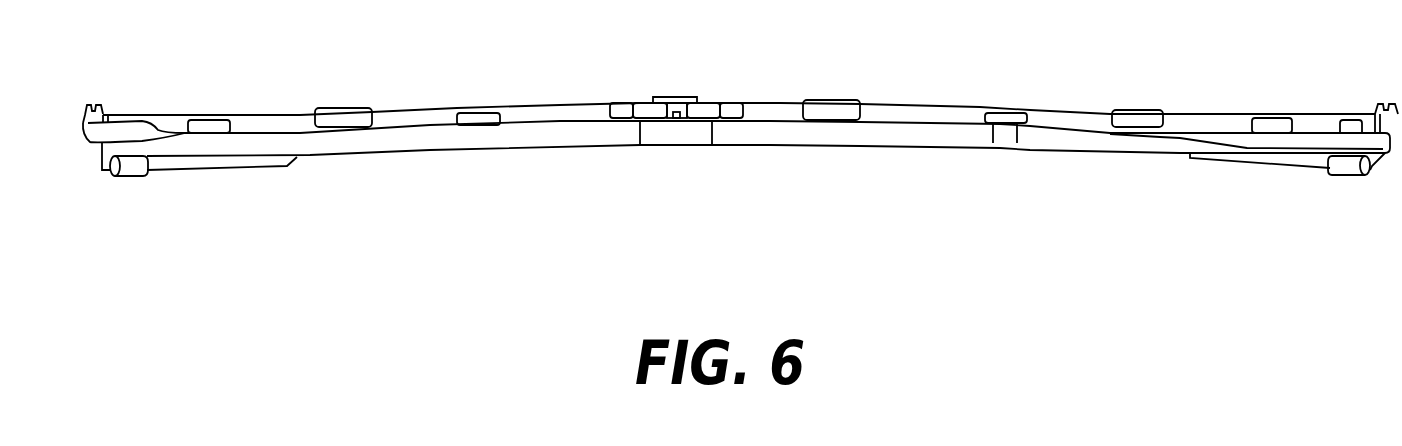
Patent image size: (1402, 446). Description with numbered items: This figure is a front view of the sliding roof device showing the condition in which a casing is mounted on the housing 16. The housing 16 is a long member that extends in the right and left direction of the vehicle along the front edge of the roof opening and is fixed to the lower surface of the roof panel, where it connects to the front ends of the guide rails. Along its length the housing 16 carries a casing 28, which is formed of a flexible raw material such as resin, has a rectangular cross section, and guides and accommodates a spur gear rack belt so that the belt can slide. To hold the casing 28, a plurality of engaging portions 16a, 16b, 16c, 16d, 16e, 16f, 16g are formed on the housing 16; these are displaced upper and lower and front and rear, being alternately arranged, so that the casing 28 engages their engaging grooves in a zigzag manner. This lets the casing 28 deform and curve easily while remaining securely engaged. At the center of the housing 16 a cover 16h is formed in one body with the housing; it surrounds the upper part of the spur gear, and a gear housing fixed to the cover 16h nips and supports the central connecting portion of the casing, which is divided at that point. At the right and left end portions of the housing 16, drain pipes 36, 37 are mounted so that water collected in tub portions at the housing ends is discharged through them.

The housing 16 is at (772, 135).
The engaging portion 16a is at (213, 125).
The engaging portion 16b is at (347, 115).
The engaging portion 16c is at (480, 118).
The engaging portion 16d is at (838, 107).
The engaging portion 16e is at (1010, 117).
The engaging portion 16f is at (1143, 117).
The engaging portion 16g is at (1272, 123).
The cover 16h is at (737, 108).
The casing 28 is at (558, 107).
The drain pipe 36 is at (130, 165).
The drain pipe 37 is at (1347, 165).